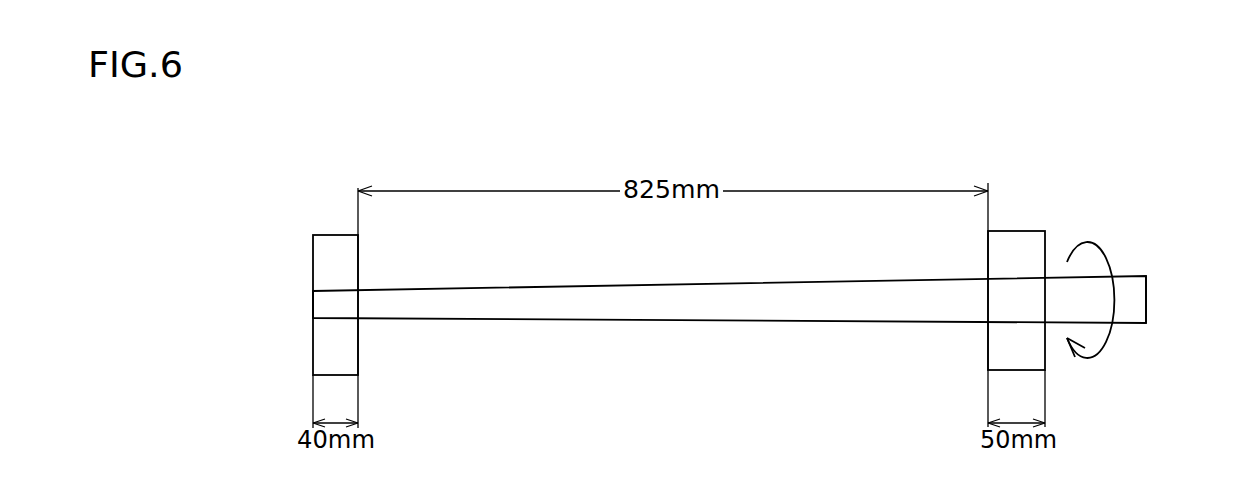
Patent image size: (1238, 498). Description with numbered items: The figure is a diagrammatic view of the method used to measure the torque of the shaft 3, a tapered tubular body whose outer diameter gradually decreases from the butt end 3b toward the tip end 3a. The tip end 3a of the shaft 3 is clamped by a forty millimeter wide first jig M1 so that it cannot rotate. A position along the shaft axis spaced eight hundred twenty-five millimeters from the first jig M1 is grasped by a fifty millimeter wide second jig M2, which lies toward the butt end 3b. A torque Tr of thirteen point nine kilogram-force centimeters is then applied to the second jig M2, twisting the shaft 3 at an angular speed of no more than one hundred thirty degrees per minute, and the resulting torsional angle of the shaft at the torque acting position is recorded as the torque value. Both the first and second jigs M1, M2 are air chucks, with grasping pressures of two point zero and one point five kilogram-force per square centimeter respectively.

The shaft 3 is at (780, 312).
The tip end 3a is at (312, 305).
The butt end 3b is at (1147, 300).
The first jig M1 is at (337, 230).
The second jig M2 is at (1025, 226).
The torque Tr is at (1090, 315).